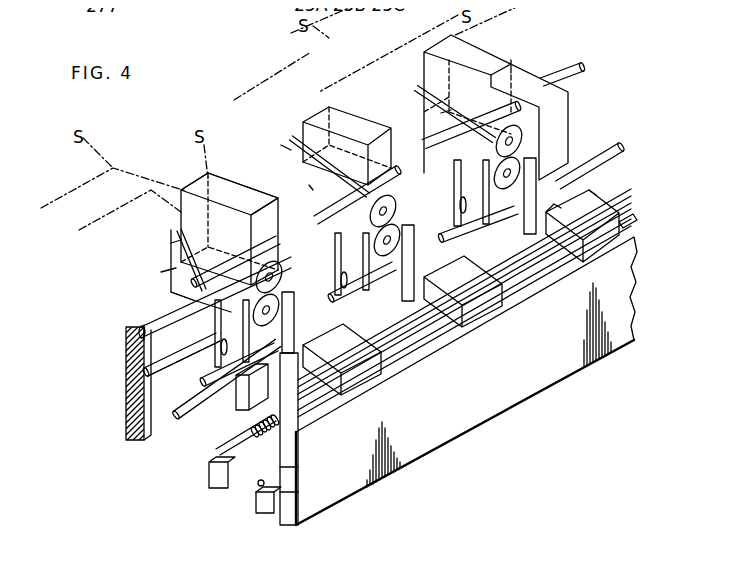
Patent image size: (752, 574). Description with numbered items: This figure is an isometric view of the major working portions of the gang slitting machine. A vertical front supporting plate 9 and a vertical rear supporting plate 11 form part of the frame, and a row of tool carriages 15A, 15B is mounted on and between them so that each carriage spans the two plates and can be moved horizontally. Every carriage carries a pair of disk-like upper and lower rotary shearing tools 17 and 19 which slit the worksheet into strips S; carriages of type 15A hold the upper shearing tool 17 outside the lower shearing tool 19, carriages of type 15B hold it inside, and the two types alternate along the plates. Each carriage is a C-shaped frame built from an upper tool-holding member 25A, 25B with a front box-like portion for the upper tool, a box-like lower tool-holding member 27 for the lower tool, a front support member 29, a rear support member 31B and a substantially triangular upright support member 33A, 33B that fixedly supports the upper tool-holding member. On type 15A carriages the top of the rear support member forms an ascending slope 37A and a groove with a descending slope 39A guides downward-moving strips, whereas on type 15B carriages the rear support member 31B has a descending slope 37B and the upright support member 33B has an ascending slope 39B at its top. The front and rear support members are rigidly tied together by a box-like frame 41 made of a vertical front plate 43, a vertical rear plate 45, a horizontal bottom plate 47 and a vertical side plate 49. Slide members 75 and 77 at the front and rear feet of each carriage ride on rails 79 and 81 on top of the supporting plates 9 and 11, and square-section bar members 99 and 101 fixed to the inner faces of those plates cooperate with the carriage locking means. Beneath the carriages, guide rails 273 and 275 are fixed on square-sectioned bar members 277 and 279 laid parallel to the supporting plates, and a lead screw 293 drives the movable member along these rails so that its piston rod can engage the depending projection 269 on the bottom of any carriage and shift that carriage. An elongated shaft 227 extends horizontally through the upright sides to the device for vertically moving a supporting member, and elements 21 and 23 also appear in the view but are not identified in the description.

The front supporting plate 9 is at (626, 324).
The rear supporting plate 11 is at (130, 420).
The tool carriage 15A is at (298, 105).
The tool carriage 15B is at (178, 180).
The upper rotary shearing tool 17 is at (272, 280).
The lower rotary shearing tool 19 is at (267, 315).
The drive shaft 21 is at (580, 66).
The drive shaft 23 is at (622, 148).
The upper tool-holding member 25A is at (317, 108).
The upper tool-holding member 25B is at (197, 175).
The lower tool-holding member 27 is at (318, 317).
The front support member 29 is at (610, 210).
The rear support member 31B is at (236, 257).
The upright support member 33A is at (280, 145).
The upright support member 33B is at (170, 243).
The ascending slope 37A is at (308, 185).
The descending slope 37B is at (160, 272).
The descending slope 39A is at (285, 175).
The ascending slope 39B is at (178, 232).
The box-like frame 41 is at (587, 188).
The front plate 43 is at (595, 268).
The rear plate 45 is at (260, 225).
The bottom plate 47 is at (515, 250).
The side plate 49 is at (552, 247).
The slide member 75 is at (607, 238).
The slide member 77 is at (173, 297).
The rail 79 is at (632, 218).
The rail 81 is at (140, 328).
The square-section bar member 99 is at (298, 467).
The square-section bar member 101 is at (145, 366).
The elongated shaft 227 is at (187, 403).
The depending projection 269 is at (242, 400).
The guide rail 273 is at (298, 495).
The guide rail 275 is at (230, 450).
The square-sectioned bar member 277 is at (255, 503).
The square-sectioned bar member 279 is at (208, 473).
The lead screw 293 is at (250, 486).